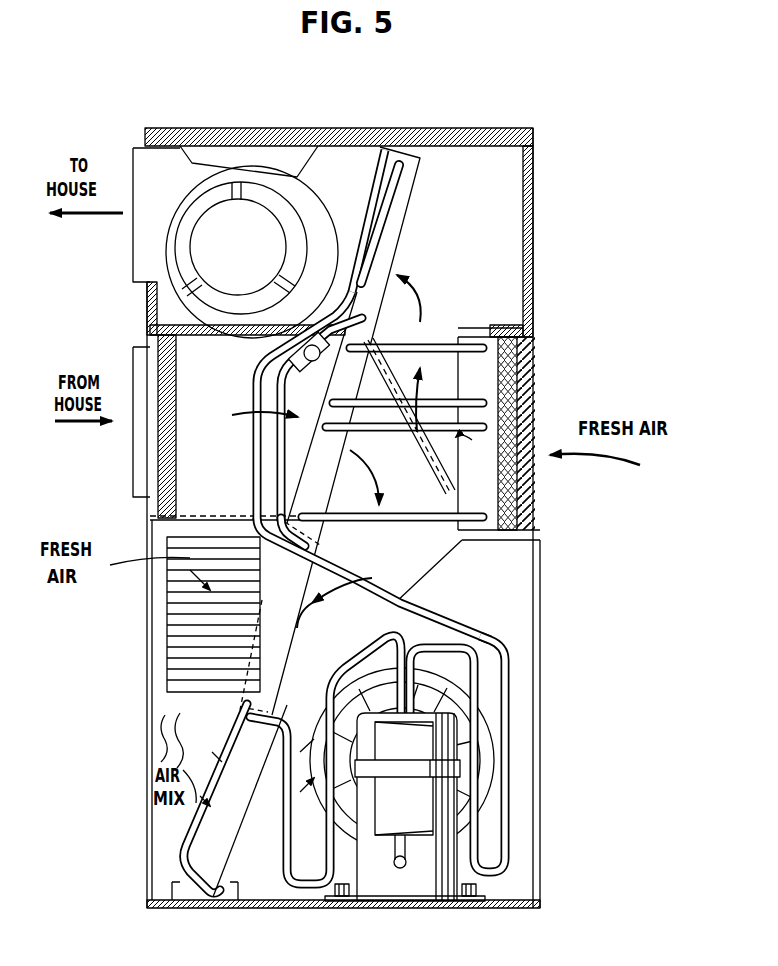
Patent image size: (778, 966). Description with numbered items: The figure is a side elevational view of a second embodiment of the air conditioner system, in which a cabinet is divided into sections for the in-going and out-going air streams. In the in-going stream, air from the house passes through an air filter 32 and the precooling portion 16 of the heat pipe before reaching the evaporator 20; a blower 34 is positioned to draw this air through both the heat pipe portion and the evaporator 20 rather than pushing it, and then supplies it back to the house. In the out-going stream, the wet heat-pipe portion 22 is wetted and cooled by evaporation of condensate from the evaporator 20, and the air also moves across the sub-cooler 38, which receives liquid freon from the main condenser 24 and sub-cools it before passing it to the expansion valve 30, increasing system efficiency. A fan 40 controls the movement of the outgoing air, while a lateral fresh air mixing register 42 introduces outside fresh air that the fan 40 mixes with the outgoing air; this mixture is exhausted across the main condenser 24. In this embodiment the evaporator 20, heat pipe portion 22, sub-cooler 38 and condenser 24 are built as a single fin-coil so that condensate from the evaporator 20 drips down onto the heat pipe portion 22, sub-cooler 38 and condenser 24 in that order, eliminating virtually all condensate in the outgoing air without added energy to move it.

The blower 34 is at (178, 255).
The evaporator 20 is at (383, 258).
The wet heat-pipe portion 22 is at (315, 460).
The expansion valve 30 is at (296, 344).
The precooling portion of the heat-pipe 16 is at (487, 367).
The air filter 32 is at (512, 408).
The fresh air mixing register 42 is at (172, 615).
The sub-cooler 38 is at (352, 600).
The fan 40 is at (482, 762).
The main condenser 24 is at (226, 897).